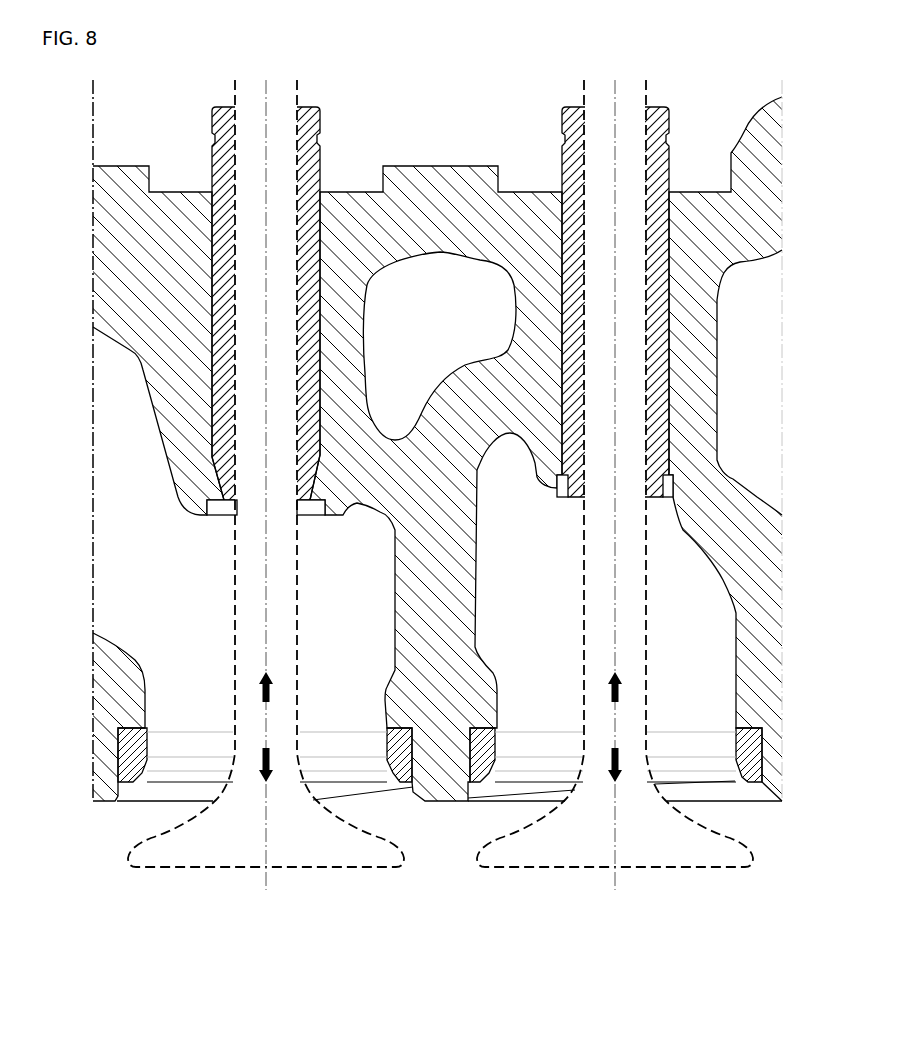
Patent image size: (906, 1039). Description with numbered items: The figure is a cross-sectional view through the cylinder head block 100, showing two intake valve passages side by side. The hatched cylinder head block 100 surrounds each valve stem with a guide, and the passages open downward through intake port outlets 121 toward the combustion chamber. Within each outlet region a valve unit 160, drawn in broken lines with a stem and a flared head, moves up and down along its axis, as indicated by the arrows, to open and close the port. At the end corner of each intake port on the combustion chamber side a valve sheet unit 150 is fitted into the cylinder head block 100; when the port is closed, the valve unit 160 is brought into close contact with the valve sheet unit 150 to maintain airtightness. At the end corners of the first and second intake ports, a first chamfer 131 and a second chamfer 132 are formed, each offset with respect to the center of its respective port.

The cylinder head block 100 is at (430, 178).
The first intake port outlet 121 is at (205, 667).
The valve sheet unit 150 is at (133, 750).
The first chamfer 131 is at (400, 795).
The second chamfer 132 is at (750, 797).
The valve unit 160 is at (312, 853).